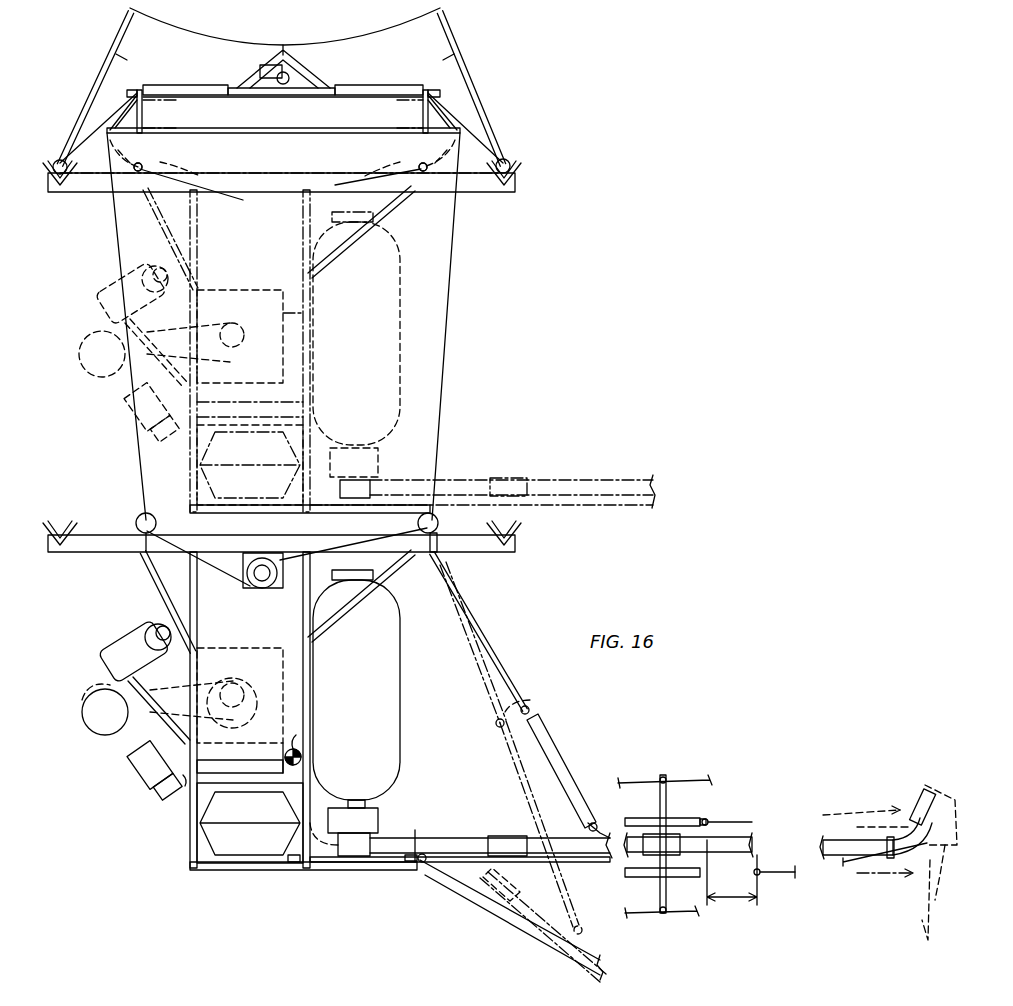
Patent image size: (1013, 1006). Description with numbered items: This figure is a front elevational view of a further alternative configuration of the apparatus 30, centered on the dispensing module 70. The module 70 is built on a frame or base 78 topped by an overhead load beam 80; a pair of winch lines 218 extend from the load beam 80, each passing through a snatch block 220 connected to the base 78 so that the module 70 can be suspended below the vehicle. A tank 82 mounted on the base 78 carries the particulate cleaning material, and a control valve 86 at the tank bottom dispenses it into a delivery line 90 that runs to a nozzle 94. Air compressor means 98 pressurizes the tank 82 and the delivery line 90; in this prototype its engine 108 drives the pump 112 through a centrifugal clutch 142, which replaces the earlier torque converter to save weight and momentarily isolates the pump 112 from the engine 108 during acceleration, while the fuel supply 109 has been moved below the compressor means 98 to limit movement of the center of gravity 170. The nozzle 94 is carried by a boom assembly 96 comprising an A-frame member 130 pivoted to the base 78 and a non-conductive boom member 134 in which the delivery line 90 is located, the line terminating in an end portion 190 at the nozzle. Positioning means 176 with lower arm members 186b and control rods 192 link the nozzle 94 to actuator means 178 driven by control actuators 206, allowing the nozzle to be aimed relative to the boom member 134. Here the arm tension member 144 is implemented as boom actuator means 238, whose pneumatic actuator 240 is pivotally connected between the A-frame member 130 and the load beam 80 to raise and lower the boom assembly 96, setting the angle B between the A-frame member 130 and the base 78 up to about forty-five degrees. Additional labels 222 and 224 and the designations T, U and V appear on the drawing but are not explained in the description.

The apparatus 30 is at (658, 522).
The dispensing module 70 is at (520, 575).
The frame or base 78 is at (190, 845).
The overhead load beam 80 is at (460, 555).
The tank 82 is at (366, 362).
The control valve 86 is at (380, 810).
The delivery line 90 is at (445, 838).
The nozzle 94 is at (925, 790).
The boom assembly 96 is at (570, 468).
The air compressor means 98 is at (185, 782).
The engine 108 is at (98, 765).
The fuel supply 109 is at (262, 850).
The pump 112 is at (260, 688).
The A-frame member 130 is at (455, 883).
The boom member 134 is at (755, 843).
The centrifugal clutch 142 is at (82, 712).
The arm tension member 144 is at (478, 625).
The center of gravity 170 is at (300, 748).
The positioning means 176 is at (919, 806).
The actuator means 178 is at (700, 815).
The lower arm members 186b is at (920, 905).
The end portion of the delivery line 190 is at (883, 825).
The control rod 192 is at (740, 822).
The control actuator 206 is at (650, 818).
The winch line 218 is at (122, 150).
The snatch block 220 is at (145, 168).
The width 222 is at (650, 782).
The cross bar 224 is at (663, 780).
The boom actuator means 238 is at (530, 703).
The pneumatic actuator 240 is at (550, 737).
The angle B is at (541, 872).
The dimension T is at (732, 874).
The direction U is at (932, 786).
The direction V is at (938, 878).